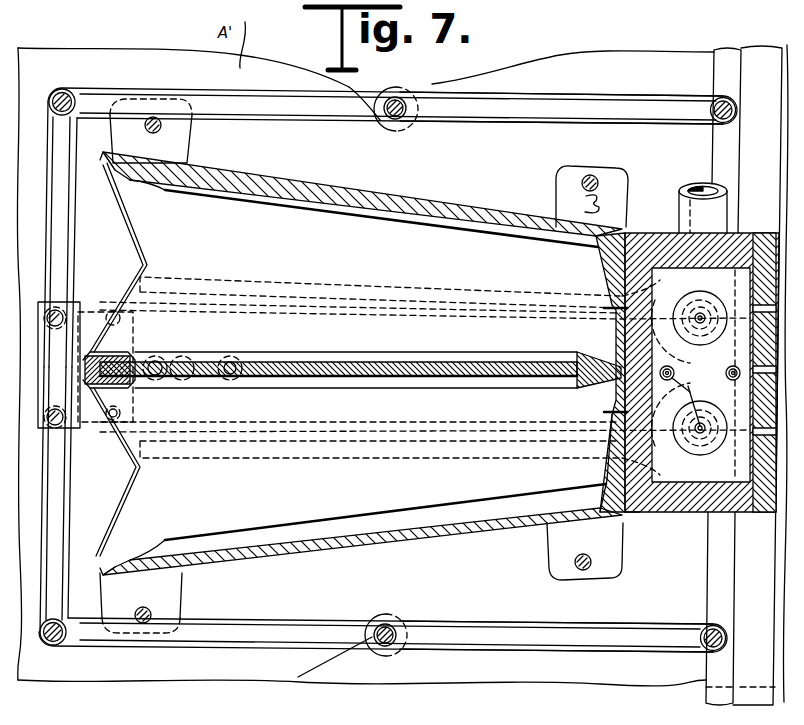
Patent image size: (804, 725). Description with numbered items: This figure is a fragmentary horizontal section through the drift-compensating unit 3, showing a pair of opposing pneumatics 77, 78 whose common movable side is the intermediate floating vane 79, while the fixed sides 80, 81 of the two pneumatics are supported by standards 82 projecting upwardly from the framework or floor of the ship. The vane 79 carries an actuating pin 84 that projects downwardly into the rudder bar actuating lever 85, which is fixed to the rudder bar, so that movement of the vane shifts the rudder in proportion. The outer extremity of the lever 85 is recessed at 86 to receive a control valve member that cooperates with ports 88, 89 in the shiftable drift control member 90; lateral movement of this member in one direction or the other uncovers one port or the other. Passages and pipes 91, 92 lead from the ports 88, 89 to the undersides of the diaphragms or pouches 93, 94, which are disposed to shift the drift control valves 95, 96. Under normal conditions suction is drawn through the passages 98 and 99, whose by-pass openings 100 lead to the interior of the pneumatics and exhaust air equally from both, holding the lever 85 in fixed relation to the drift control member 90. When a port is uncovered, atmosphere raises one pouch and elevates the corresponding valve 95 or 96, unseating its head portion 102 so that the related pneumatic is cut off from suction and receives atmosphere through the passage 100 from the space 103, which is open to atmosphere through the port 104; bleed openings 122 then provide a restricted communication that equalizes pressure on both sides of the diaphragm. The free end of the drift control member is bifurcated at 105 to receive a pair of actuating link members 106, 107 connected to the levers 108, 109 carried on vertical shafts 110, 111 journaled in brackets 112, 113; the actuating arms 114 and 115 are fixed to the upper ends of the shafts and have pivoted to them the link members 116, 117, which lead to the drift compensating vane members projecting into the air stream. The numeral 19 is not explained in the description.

The drift-compensating unit 3 is at (592, 204).
The pipe 19 is at (688, 212).
The pneumatic 77 is at (318, 498).
The pneumatic 78 is at (374, 240).
The floating vane 79 is at (303, 362).
The fixed side 80 is at (448, 543).
The fixed side 81 is at (496, 214).
The standards 82 is at (192, 135).
The actuating pin 84 is at (186, 358).
The rudder bar actuating lever 85 is at (392, 318).
The recess 86 is at (155, 360).
The port 88 is at (112, 312).
The port 89 is at (112, 426).
The drift control member 90 is at (260, 290).
The passage and pipe 91 is at (192, 278).
The passage and pipe 92 is at (228, 450).
The diaphragm or pouch 93 is at (665, 512).
The diaphragm or pouch 94 is at (606, 273).
The drift control valve 95 is at (614, 458).
The drift control valve 96 is at (608, 356).
The passage 98 is at (671, 370).
The passage 99 is at (690, 390).
The by-pass opening 100 is at (620, 309).
The head portion 102 is at (716, 289).
The space 103 is at (650, 513).
The port 104 is at (736, 366).
The bifurcation 105 is at (50, 273).
The actuating link member 106 is at (60, 245).
The actuating link member 107 is at (60, 505).
The lever 108 is at (179, 96).
The lever 109 is at (244, 628).
The vertical shaft 110 is at (398, 112).
The vertical shaft 111 is at (390, 627).
The bracket 112 is at (409, 102).
The bracket 113 is at (376, 652).
The actuating arm 114 is at (637, 99).
The actuating arm 115 is at (619, 624).
The link member 116 is at (712, 70).
The link member 117 is at (703, 665).
The bleed opening 122 is at (700, 404).